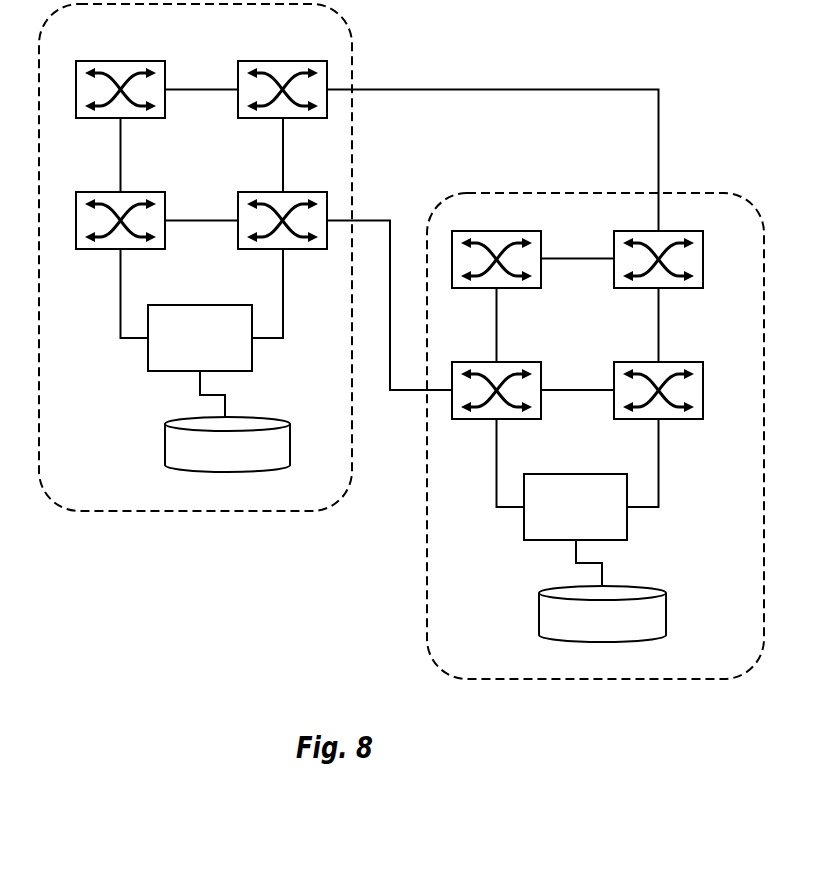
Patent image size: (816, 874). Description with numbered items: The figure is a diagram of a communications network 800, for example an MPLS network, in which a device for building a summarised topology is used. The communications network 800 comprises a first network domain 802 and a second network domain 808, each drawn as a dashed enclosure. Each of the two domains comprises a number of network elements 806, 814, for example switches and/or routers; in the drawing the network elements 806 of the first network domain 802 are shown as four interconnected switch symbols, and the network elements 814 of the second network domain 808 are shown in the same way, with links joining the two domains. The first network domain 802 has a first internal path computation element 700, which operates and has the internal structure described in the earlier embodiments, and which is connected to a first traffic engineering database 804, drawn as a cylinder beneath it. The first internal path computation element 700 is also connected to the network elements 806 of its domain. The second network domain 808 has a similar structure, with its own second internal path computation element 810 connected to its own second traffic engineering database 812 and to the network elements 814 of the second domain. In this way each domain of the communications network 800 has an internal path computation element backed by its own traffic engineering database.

The communications network 800 is at (154, 658).
The first network domain 802 is at (214, 493).
The network elements 806 is at (252, 110).
The first internal path computation element (I-PCE 1) 700 is at (165, 363).
The first traffic engineering database (TE DB 1) 804 is at (172, 453).
The second network domain 808 is at (440, 587).
The network elements 814 is at (628, 275).
The I-PCE 2 810 is at (541, 527).
The TE DB 2 812 is at (555, 613).